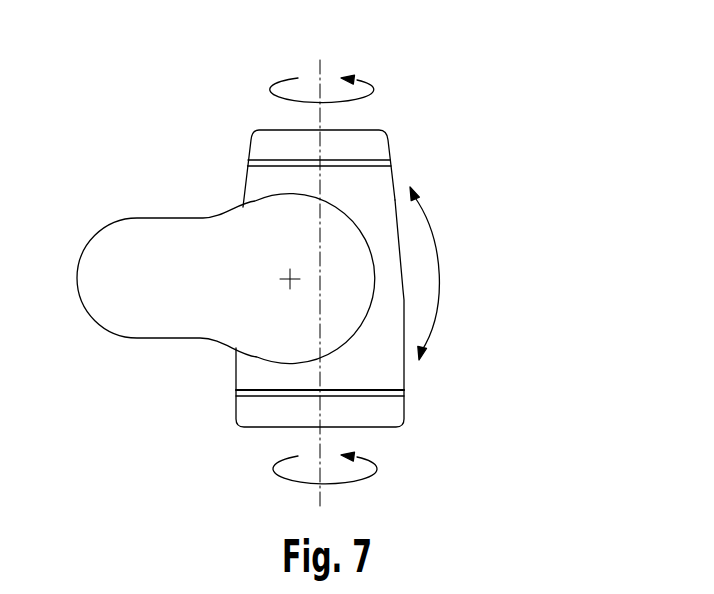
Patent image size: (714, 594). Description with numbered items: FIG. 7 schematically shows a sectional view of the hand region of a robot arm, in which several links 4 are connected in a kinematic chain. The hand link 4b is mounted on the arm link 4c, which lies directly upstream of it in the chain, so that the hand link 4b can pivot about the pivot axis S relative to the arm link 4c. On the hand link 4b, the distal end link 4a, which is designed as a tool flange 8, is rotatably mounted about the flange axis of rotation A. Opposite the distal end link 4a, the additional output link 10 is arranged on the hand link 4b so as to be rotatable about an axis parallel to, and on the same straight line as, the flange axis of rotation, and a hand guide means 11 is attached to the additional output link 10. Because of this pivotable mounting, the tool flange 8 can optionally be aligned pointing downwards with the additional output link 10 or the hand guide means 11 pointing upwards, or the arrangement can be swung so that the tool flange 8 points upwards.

The links 4 is at (341, 225).
The arm link 4c is at (154, 245).
The hand link 4b is at (377, 187).
The distal end link 4a is at (420, 387).
The tool flange 8 is at (390, 407).
The additional output link 10 is at (388, 115).
The hand guide means 11 is at (377, 147).